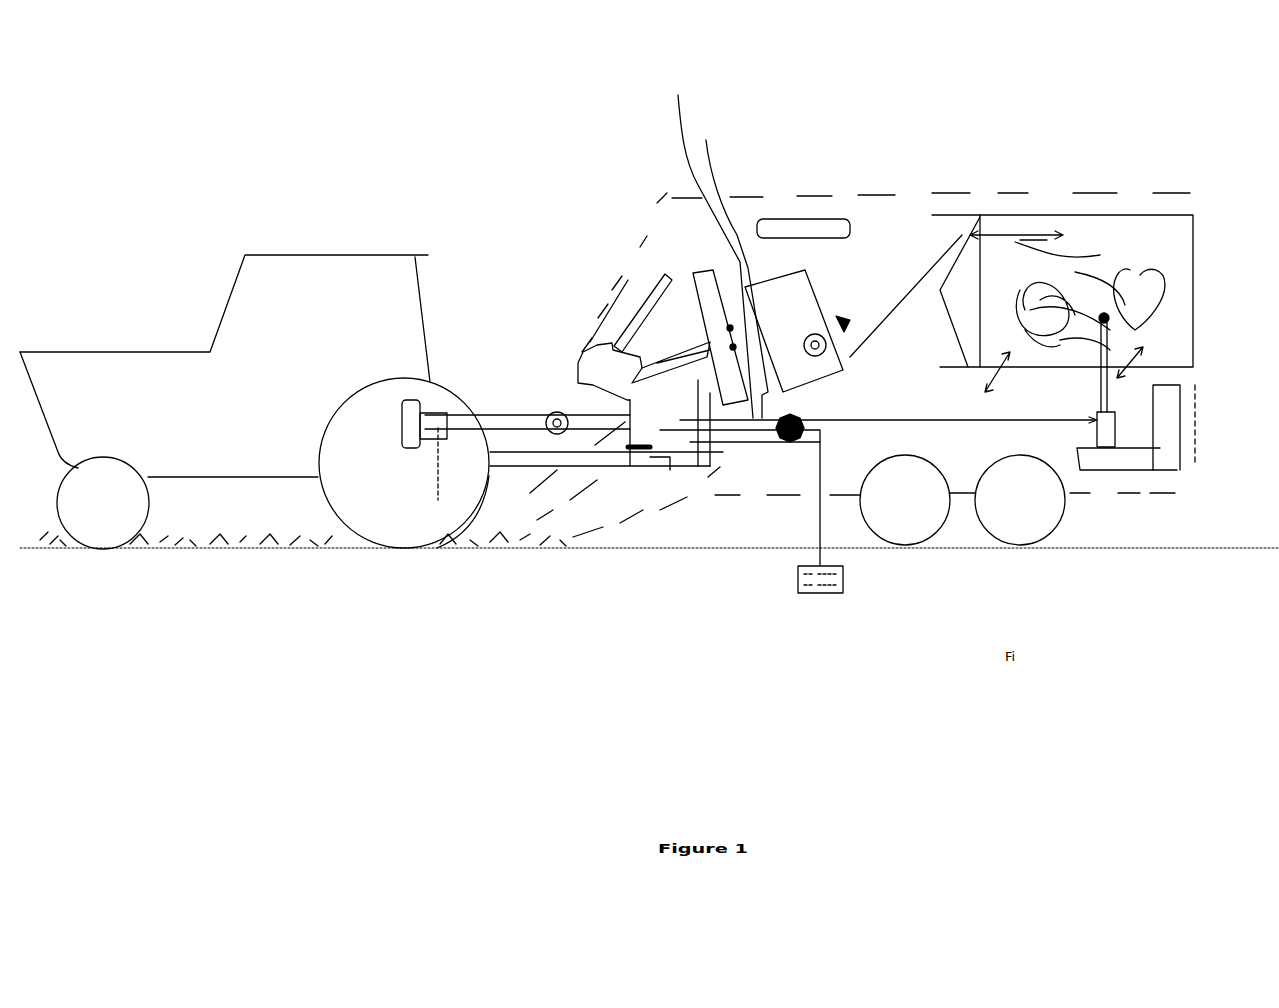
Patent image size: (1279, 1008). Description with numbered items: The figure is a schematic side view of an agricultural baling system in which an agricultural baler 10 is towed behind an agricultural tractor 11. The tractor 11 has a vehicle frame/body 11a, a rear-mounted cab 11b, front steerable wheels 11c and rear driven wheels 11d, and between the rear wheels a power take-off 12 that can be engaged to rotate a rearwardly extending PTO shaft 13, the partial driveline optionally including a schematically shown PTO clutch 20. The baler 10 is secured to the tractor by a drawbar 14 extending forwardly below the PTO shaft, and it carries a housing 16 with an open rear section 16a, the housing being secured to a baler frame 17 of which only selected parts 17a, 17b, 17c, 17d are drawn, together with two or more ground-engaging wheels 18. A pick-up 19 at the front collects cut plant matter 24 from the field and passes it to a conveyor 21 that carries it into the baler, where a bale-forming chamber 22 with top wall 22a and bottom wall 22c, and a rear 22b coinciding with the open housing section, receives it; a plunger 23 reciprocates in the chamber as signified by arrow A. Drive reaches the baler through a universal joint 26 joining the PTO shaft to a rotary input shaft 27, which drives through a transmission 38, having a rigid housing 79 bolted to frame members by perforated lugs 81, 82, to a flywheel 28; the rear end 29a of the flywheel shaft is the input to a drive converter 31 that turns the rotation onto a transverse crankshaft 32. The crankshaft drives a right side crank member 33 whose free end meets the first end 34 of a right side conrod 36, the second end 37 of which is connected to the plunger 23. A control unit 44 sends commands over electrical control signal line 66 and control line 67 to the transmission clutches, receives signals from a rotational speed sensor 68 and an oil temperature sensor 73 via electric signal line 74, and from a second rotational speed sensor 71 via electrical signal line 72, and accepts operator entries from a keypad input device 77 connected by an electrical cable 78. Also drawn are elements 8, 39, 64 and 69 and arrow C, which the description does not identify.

The crop flow line 8 is at (853, 360).
The agricultural baler 10 is at (1135, 188).
The agricultural tractor 11 is at (254, 388).
The vehicle frame/body 11a is at (120, 377).
The cab 11b is at (262, 272).
The front wheels 11c is at (100, 525).
The rear wheels 11d is at (398, 540).
The power take-off 12 is at (420, 410).
The PTO shaft 13 is at (510, 416).
The drawbar 14 is at (487, 535).
The housing 16 is at (878, 195).
The open housing section 16a is at (1197, 228).
The baler frame 17 is at (822, 220).
The frame part 17a is at (652, 467).
The frame part 17b is at (645, 283).
The frame part 17c is at (778, 220).
The frame part 17d is at (1195, 430).
The ground-engaging wheels 18 is at (905, 535).
The pick-up 19 is at (525, 540).
The PTO clutch 20 is at (440, 460).
The conveyor 21 is at (570, 525).
The bale-forming chamber 22 is at (1175, 212).
The top wall 22a is at (1008, 255).
The rear of bale-forming chamber 22b is at (1197, 268).
The bottom wall 22c is at (1183, 366).
The plunger 23 is at (958, 266).
The cut plant matter 24 is at (245, 545).
The universal joint 26 is at (552, 414).
The rotary input shaft 27 is at (555, 473).
The flywheel 28 is at (698, 268).
The rear end of flywheel shaft 29a is at (709, 242).
The drive converter 31 is at (732, 269).
The crankshaft 32 is at (820, 320).
The right side crank member 33 is at (823, 377).
The first end of conrod 34 is at (843, 330).
The right side conrod 36 is at (922, 300).
The second end of conrod 37 is at (937, 297).
The transmission 38 is at (585, 365).
The pickup support 39 is at (672, 350).
The control unit 44 is at (805, 432).
The bale density actuator 64 is at (1117, 450).
The electrical control signal line 66 is at (748, 453).
The control line 67 is at (705, 423).
The rotational speed sensor 68 is at (578, 467).
The pivot pin 69 is at (772, 452).
The second rotational speed sensor 71 is at (716, 270).
The electrical signal line 72 is at (762, 397).
The oil temperature sensor 73 is at (660, 428).
The electric signal line 74 is at (684, 457).
The input device 77 is at (797, 576).
The electrical cable 78 is at (818, 523).
The rigid housing 79 is at (670, 376).
The perforated lug 81 is at (660, 460).
The perforated lug 82 is at (612, 340).
The arrow A is at (1010, 257).
The compression direction C is at (1071, 369).